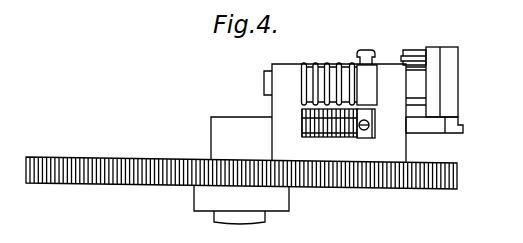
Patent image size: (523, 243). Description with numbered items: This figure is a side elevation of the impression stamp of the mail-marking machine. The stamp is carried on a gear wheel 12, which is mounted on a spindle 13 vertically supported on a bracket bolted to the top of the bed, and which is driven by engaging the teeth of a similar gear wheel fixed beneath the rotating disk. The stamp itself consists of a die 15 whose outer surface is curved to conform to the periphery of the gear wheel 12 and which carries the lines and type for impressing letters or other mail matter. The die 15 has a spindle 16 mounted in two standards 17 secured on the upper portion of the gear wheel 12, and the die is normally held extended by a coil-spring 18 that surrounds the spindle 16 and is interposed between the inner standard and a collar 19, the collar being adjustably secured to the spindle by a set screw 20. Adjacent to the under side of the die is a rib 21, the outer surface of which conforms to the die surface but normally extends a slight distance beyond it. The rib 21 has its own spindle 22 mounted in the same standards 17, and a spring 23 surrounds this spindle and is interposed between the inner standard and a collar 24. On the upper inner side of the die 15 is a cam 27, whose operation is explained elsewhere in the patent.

The gear wheel 12 is at (241, 163).
The spindle 13 is at (233, 219).
The die 15 is at (449, 79).
The spindle 16 is at (331, 70).
The standards 17 is at (308, 113).
The coil-spring 18 is at (342, 63).
The collar 19 is at (368, 85).
The set screw 20 is at (375, 55).
The rib 21 is at (459, 128).
The spindle 22 is at (332, 133).
The spring 23 is at (311, 133).
The collar 24 is at (364, 138).
The cam 27 is at (420, 44).